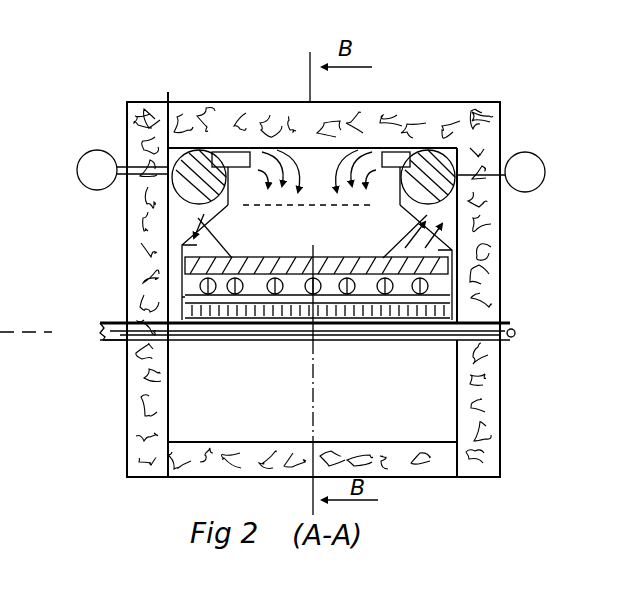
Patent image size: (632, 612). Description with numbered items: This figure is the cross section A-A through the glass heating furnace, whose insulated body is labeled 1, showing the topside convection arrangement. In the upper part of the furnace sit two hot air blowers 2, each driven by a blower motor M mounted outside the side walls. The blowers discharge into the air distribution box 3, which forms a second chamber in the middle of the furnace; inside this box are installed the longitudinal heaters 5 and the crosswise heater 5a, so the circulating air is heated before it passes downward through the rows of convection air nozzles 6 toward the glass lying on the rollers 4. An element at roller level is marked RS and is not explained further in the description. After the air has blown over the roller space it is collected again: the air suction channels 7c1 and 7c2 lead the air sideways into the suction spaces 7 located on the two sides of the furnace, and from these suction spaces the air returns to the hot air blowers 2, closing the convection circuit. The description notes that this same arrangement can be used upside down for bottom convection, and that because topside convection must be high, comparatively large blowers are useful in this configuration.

The housing 1 is at (428, 102).
The hot air blowers 2 is at (497, 102).
The air distribution box 3 is at (292, 200).
The rollers 4 is at (500, 322).
The longitudinal heaters 5 is at (452, 283).
The crosswise heater 5a is at (448, 258).
The convection air nozzle rows 6 is at (457, 323).
The suction spaces 7 is at (457, 183).
The air suction channel 7c1 is at (185, 297).
The air suction channel 7c2 is at (185, 240).
The recording sheet RS is at (127, 321).
The blower M is at (311, 171).